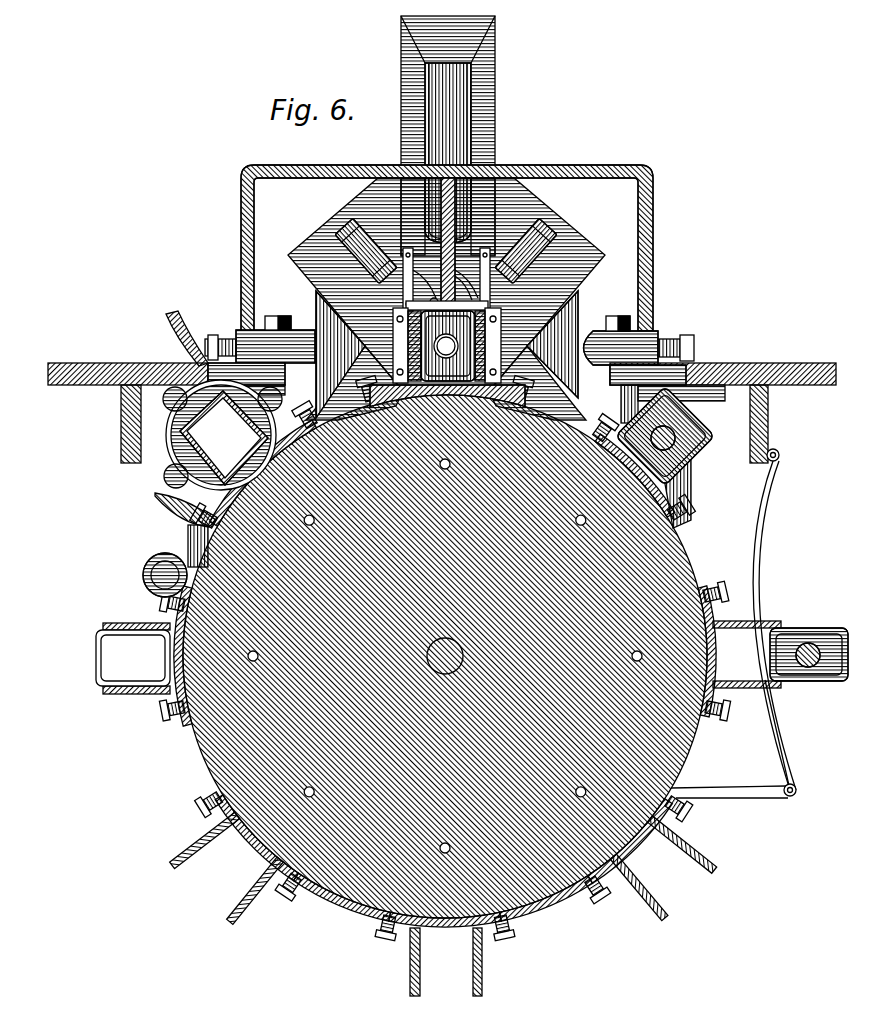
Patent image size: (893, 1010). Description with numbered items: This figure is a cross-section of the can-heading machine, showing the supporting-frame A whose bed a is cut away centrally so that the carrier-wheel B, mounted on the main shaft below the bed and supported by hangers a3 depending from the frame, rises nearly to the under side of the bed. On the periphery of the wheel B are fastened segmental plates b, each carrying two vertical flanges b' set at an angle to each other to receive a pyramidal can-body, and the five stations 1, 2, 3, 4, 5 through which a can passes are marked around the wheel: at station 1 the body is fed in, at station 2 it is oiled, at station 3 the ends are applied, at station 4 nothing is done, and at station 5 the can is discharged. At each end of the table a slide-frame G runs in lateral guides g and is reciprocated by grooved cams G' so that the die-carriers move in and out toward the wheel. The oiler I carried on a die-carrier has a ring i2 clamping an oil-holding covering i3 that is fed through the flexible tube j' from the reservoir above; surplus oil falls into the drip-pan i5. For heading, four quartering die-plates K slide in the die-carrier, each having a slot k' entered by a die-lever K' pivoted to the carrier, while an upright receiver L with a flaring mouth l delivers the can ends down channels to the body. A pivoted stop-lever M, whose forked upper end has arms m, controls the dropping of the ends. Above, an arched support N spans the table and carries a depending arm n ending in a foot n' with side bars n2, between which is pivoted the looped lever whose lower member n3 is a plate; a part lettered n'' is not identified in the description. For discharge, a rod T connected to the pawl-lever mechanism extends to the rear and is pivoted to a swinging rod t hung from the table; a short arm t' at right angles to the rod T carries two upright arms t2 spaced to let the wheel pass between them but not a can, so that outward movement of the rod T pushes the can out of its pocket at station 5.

The upright receiver L is at (487, 72).
The arched support N is at (645, 228).
The quartering die-plates K is at (455, 299).
The die-lever K' is at (439, 302).
The slot k' is at (467, 246).
The stop-lever M is at (400, 216).
The flaring mouth l is at (464, 206).
The fork arm m is at (480, 214).
The depending arm n is at (487, 264).
The foot n' is at (427, 288).
The rod n'' is at (457, 243).
The side bars n2 is at (483, 300).
The lower member n3 is at (447, 357).
The third station 3 is at (446, 356).
The lateral guides g is at (285, 322).
The grooved cams G' is at (254, 379).
The slide-frame G is at (636, 379).
The oil-holding covering i3 is at (311, 403).
The flexible tube j' is at (192, 330).
The bed a is at (146, 355).
The oiler I is at (158, 427).
The second station 2 is at (221, 435).
The ring i2 is at (160, 462).
The drip-pan i5 is at (170, 501).
The hangers a3 is at (180, 546).
The fourth station 4 is at (670, 435).
The swinging rod t is at (774, 625).
The first station 1 is at (133, 658).
The supporting-frame A is at (452, 636).
The fifth station 5 is at (780, 654).
The upright arms t2 is at (773, 742).
The discharge rod T is at (725, 791).
The short arm t' is at (796, 814).
The segmental plates b is at (443, 874).
The vertical flanges b' is at (444, 670).
The carrier-wheel B is at (545, 893).